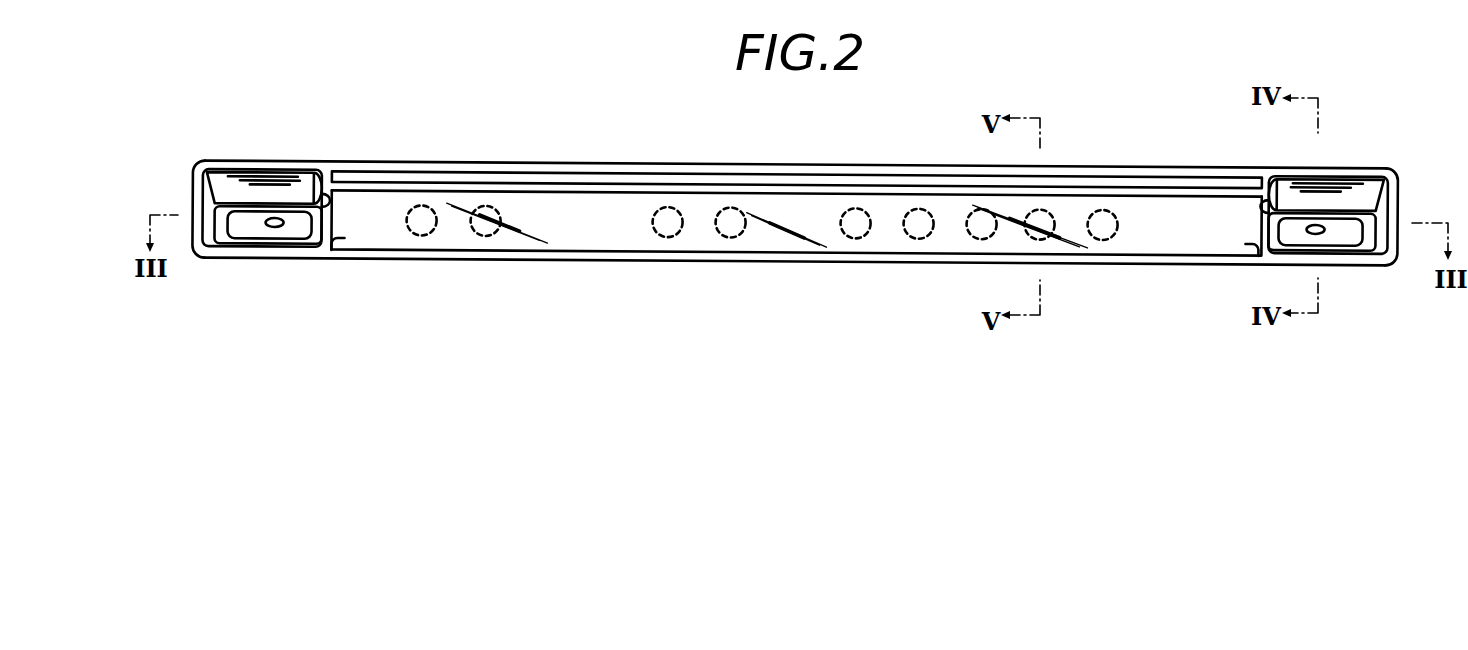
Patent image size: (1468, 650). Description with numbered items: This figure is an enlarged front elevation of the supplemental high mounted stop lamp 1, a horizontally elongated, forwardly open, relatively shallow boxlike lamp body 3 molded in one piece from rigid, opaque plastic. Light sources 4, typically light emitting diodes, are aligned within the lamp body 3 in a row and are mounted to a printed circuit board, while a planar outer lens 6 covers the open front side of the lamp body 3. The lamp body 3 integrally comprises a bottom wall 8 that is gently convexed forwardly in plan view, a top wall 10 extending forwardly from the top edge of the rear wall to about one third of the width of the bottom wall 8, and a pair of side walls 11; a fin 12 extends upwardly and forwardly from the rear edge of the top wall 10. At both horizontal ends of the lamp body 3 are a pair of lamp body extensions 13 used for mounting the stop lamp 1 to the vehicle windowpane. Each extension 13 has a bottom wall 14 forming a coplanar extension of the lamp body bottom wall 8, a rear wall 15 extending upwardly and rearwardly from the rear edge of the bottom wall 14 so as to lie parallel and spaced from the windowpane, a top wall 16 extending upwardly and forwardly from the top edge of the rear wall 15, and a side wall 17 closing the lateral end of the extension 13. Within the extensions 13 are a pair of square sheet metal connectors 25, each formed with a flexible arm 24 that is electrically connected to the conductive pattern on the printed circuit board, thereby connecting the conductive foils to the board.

The supplemental high mounted stop lamp 1 is at (1113, 150).
The lamp body 3 is at (833, 165).
The light sources 4 is at (485, 236).
The outer lens 6 is at (605, 231).
The bottom wall 8 is at (398, 259).
The top wall 10 is at (437, 183).
The side walls 11 is at (342, 242).
The fin 12 is at (560, 164).
The lamp body extensions 13 is at (228, 160).
The bottom wall 14 is at (260, 253).
The rear wall 15 is at (218, 245).
The top wall 16 is at (257, 162).
The side wall 17 is at (195, 190).
The flexible arm 24 is at (317, 190).
The sheet metal connectors 25 is at (290, 213).